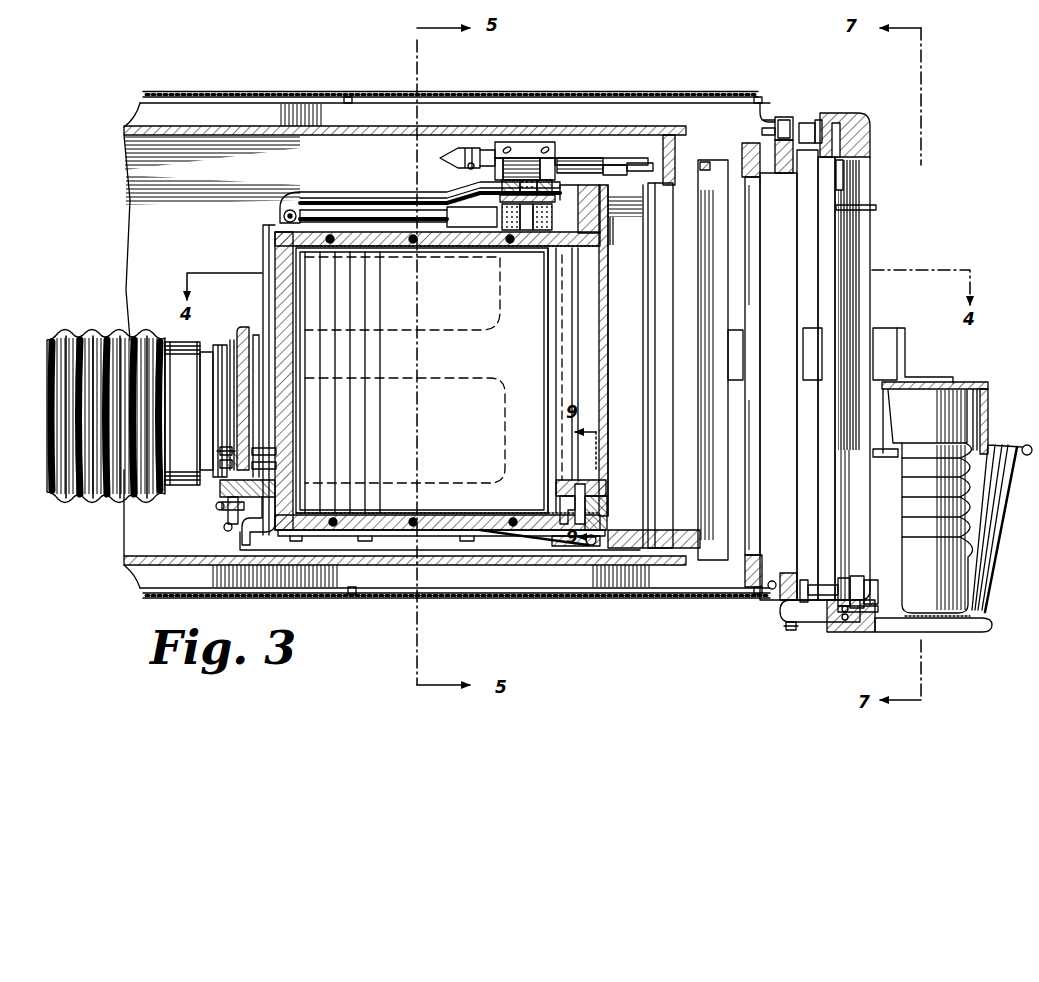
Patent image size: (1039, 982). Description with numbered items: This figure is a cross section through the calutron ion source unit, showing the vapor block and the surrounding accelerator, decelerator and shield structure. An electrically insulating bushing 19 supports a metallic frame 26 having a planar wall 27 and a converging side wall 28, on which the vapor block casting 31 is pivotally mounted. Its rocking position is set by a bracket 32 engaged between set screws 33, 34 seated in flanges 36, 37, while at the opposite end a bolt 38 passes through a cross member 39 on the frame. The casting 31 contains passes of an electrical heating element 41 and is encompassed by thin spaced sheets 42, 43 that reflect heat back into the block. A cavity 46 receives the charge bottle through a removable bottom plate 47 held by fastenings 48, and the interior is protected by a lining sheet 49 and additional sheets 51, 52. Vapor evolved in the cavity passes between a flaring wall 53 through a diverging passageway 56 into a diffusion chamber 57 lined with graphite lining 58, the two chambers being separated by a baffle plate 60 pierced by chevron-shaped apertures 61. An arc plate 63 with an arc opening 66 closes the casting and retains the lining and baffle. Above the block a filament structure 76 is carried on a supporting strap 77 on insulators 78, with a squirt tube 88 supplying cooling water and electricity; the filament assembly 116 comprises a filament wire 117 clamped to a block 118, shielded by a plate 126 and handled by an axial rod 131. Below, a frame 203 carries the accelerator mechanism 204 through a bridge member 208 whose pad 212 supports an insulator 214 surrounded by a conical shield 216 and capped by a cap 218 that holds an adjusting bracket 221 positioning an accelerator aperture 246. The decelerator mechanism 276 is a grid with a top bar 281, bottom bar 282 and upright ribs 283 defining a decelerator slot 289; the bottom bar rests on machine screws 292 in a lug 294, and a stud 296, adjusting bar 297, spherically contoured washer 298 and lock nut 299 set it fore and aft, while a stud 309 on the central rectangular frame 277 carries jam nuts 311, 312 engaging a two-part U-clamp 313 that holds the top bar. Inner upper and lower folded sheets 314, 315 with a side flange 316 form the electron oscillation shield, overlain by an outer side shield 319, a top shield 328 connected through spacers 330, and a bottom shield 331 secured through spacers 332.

The electrically insulating bushing 19 is at (157, 498).
The metallic frame 26 is at (240, 328).
The planar wall 27 is at (238, 345).
The side wall 28 is at (388, 338).
The vapor block casting 31 is at (395, 247).
The bracket 32 is at (222, 492).
The set screw 33 is at (226, 447).
The set screw 34 is at (228, 527).
The flange 36 is at (222, 463).
The flange 37 is at (224, 508).
The bolt 38 is at (604, 491).
The cross member 39 is at (607, 513).
The electrical heating element 41 is at (426, 250).
The sheet 42 is at (262, 229).
The sheet 43 is at (262, 250).
The cavity 46 is at (381, 382).
The removable bottom plate 47 is at (456, 525).
The fastening 48 is at (380, 530).
The lining sheet 49 is at (546, 351).
The sheet 51 is at (486, 248).
The sheet 52 is at (560, 398).
The flaring wall 53 is at (590, 244).
The diverging passageway 56 is at (575, 344).
The diffusion chamber 57 is at (625, 366).
The lining 58 is at (600, 294).
The baffle plate 60 is at (602, 370).
The aperture 61 is at (600, 317).
The arc plate 63 is at (662, 432).
The arc opening 66 is at (664, 221).
The filament structure 76 is at (527, 141).
The supporting strap 77 is at (527, 232).
The insulator 78 is at (556, 214).
The squirt tube 88 is at (345, 196).
The filament assembly 116 is at (622, 160).
The filament wire 117 is at (642, 162).
The block 118 is at (562, 160).
The plate 126 is at (628, 163).
The axial rod 131 is at (452, 150).
The frame 203 is at (848, 244).
The accelerator mechanism 204 is at (721, 355).
The bridge member 208 is at (870, 633).
The pad 212 is at (952, 633).
The insulator 214 is at (930, 394).
The conical shield 216 is at (1005, 456).
The cap 218 is at (986, 383).
The adjusting bracket 221 is at (897, 328).
The accelerator aperture 246 is at (712, 184).
The decelerator mechanism 276 is at (769, 365).
The central rectangular frame 277 is at (850, 114).
The top bar 281 is at (787, 168).
The bottom bar 282 is at (786, 572).
The upright rib 283 is at (775, 437).
The decelerator slot 289 is at (753, 316).
The machine screw 292 is at (792, 630).
The lug 294 is at (812, 623).
The stud 296 is at (799, 578).
The adjusting bar 297 is at (845, 577).
The spherically contoured washer 298 is at (860, 580).
The lock nut 299 is at (872, 592).
The stud 309 is at (819, 120).
The jam nut 311 is at (762, 126).
The jam nut 312 is at (806, 123).
The two-part U-clamp 313 is at (780, 117).
The upper folded sheet 314 is at (246, 124).
The lower folded sheet 315 is at (620, 567).
The side flange 316 is at (274, 166).
The outer side shield 319 is at (195, 106).
The top shield 328 is at (622, 93).
The spacer 330 is at (348, 96).
The bottom shield 331 is at (660, 599).
The spacer 332 is at (353, 595).